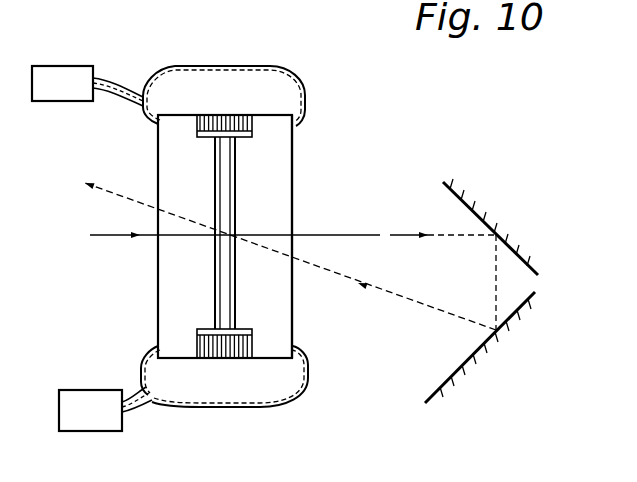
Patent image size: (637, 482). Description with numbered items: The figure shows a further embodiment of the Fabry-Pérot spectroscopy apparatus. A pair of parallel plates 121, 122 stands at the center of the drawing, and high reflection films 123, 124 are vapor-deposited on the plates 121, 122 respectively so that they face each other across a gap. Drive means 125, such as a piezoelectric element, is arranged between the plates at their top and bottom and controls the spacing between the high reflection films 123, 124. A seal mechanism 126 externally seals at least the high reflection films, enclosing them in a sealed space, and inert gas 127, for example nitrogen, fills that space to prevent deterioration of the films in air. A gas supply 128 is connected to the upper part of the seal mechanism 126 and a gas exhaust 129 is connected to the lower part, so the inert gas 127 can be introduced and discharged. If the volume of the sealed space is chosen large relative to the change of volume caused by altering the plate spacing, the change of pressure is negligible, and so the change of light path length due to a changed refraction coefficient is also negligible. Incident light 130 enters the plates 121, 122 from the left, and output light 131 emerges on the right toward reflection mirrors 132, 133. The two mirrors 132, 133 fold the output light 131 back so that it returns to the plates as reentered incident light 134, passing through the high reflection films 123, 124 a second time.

The parallel plate 121 is at (175, 187).
The parallel plate 122 is at (277, 212).
The high reflection film 123 is at (213, 165).
The high reflection film 124 is at (235, 172).
The drive means 125 is at (248, 122).
The seal mechanism 126 is at (302, 80).
The inert gas 127 is at (205, 82).
The gas supply 128 is at (62, 72).
The gas exhaust 129 is at (90, 420).
The incident light 130 is at (112, 241).
The output light 131 is at (398, 235).
The reflection mirror 132 is at (487, 212).
The reflection mirror 133 is at (480, 357).
The reentered incident light 134 is at (378, 290).